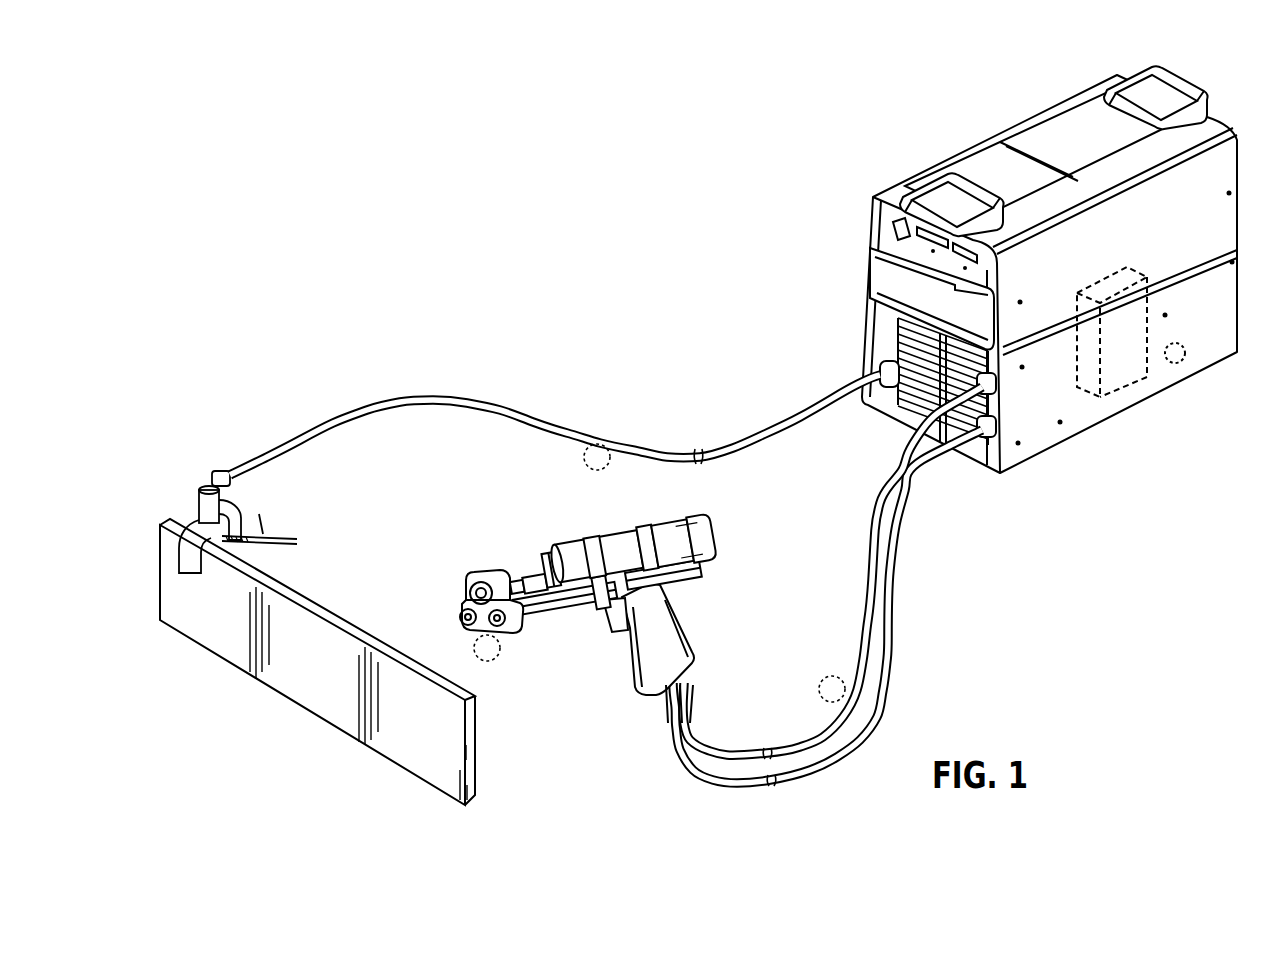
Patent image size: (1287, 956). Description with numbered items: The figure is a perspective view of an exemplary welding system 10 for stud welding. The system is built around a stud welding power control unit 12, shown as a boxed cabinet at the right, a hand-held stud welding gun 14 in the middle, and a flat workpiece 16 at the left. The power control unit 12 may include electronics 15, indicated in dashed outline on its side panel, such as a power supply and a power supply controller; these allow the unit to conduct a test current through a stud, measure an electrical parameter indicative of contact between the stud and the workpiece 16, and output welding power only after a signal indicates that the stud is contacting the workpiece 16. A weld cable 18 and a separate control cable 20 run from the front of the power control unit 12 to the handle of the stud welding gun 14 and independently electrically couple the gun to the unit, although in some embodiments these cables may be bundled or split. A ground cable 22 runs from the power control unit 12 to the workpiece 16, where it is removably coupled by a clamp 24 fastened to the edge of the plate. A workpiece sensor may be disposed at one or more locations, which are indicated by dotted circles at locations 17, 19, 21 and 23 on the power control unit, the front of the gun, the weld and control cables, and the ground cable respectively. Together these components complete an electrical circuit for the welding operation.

The welding system 10 is at (466, 235).
The stud welding power control unit 12 is at (978, 148).
The stud welding gun 14 is at (628, 653).
The electronics 15 is at (1090, 398).
The workpiece 16 is at (303, 680).
The workpiece sensor location 17 is at (1180, 363).
The weld cable 18 is at (870, 530).
The workpiece sensor location 19 is at (490, 661).
The control cable 20 is at (888, 633).
The workpiece sensor location 21 is at (827, 677).
The ground cable 22 is at (502, 403).
The workpiece sensor location 23 is at (600, 470).
The clamp 24 is at (212, 483).